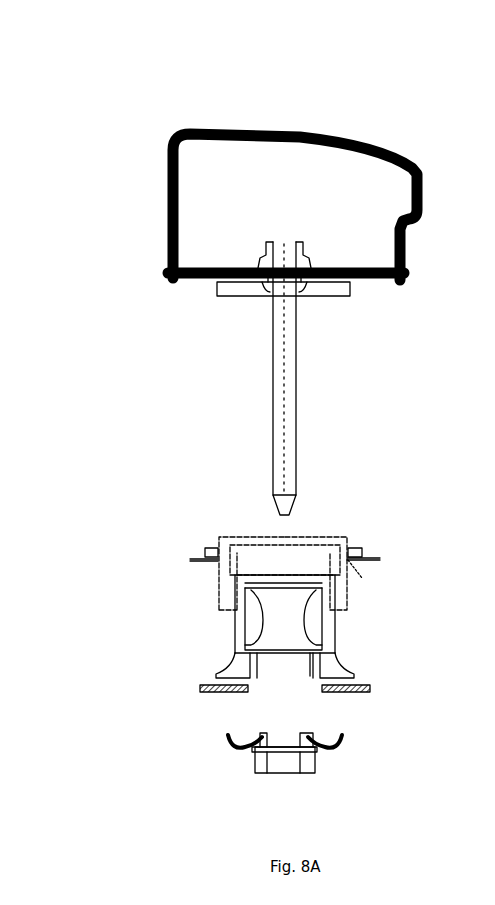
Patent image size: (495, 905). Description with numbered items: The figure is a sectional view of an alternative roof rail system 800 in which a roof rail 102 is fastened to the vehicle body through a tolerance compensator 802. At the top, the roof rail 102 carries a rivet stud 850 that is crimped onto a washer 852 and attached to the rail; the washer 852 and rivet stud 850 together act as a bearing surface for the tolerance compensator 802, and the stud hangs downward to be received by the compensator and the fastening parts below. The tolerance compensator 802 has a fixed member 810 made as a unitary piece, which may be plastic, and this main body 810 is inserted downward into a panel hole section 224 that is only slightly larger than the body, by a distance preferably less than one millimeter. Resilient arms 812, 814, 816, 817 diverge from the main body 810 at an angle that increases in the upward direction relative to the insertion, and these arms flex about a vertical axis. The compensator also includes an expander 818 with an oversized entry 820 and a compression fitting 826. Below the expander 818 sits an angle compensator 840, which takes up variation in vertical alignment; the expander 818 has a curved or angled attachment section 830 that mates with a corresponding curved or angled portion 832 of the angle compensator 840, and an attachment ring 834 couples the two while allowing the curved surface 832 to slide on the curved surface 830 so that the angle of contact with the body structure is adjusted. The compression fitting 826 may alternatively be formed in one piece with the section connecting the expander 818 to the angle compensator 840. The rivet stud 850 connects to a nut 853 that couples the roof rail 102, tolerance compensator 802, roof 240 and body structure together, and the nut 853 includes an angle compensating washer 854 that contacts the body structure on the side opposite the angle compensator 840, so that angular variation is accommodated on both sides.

The roof rail system 800 is at (222, 98).
The roof rail 102 is at (415, 168).
The rivet stud 850 is at (277, 370).
The washer 852 is at (338, 296).
The tolerance compensator 802 is at (128, 572).
The fixed member 810 is at (220, 541).
The oversized entry 820 is at (350, 548).
The resilient arm 812 is at (135, 599).
The resilient arm 814 is at (135, 599).
The resilient arm 816 is at (135, 599).
The resilient arm 817 is at (207, 568).
The panel hole section 224 is at (350, 548).
The roof 240 is at (494, 575).
The expander 818 is at (328, 620).
The compression fitting 826 is at (262, 618).
The curved or angled portion 832 is at (213, 677).
The curved or angled attachment section 830 is at (338, 662).
The angle compensator 840 is at (353, 683).
The attachment ring 834 is at (308, 672).
The nut 853 is at (250, 772).
The angle compensating washer 854 is at (341, 736).